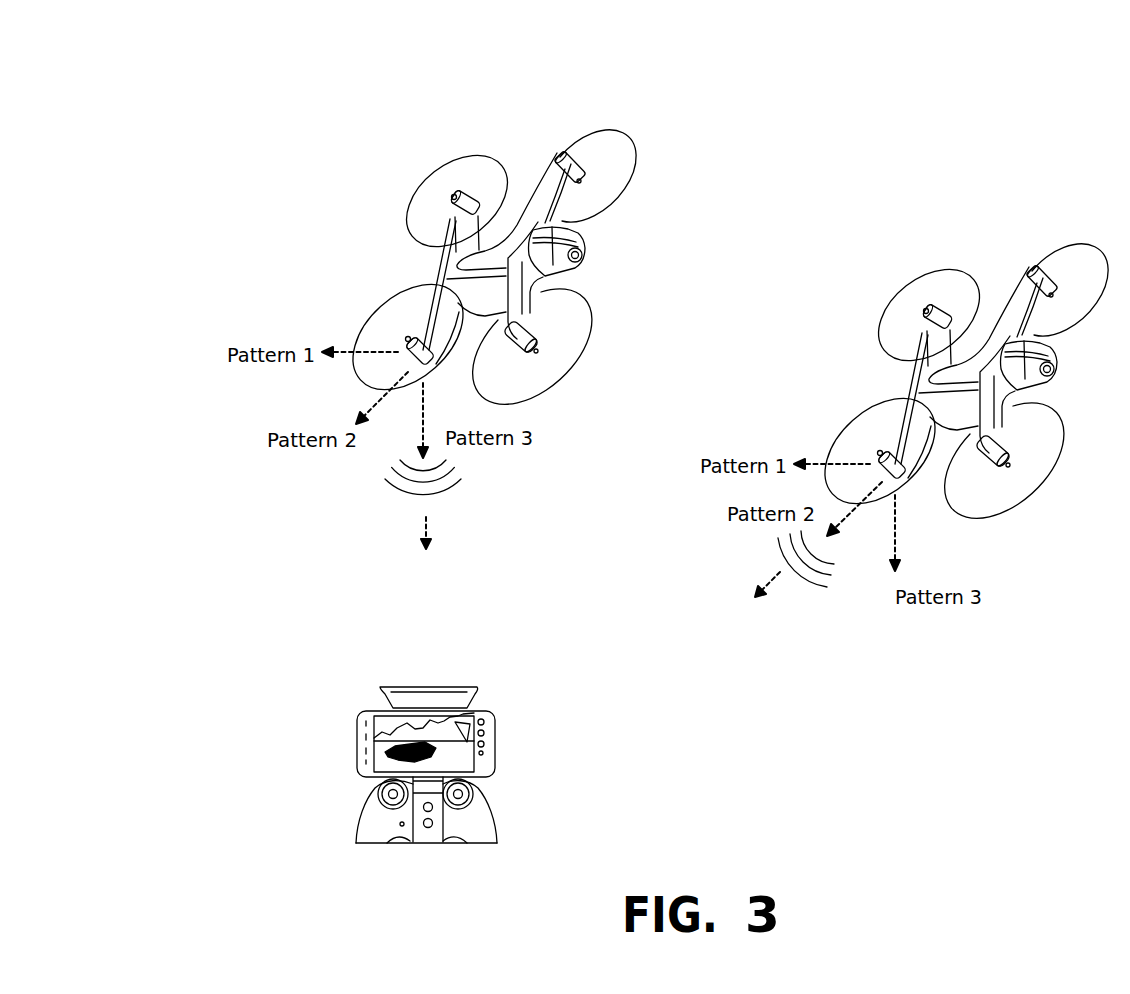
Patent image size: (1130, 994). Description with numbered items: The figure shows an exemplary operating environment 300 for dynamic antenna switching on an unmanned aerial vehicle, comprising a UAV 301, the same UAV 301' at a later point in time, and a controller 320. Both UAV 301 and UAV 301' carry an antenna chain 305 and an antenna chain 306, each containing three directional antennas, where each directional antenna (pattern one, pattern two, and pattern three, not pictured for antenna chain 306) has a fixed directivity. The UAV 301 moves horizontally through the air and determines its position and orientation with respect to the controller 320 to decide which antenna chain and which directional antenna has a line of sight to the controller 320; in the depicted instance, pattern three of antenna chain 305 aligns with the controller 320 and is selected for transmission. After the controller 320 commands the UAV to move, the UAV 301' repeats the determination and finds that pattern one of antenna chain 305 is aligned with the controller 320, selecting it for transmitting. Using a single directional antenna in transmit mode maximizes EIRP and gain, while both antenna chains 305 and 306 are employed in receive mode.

The operating environment 300 is at (96, 111).
The UAV 301 is at (464, 270).
The UAV 301' is at (935, 384).
The antenna chain 305 is at (410, 341).
The antenna chain 306 is at (455, 196).
The controller 320 is at (375, 790).